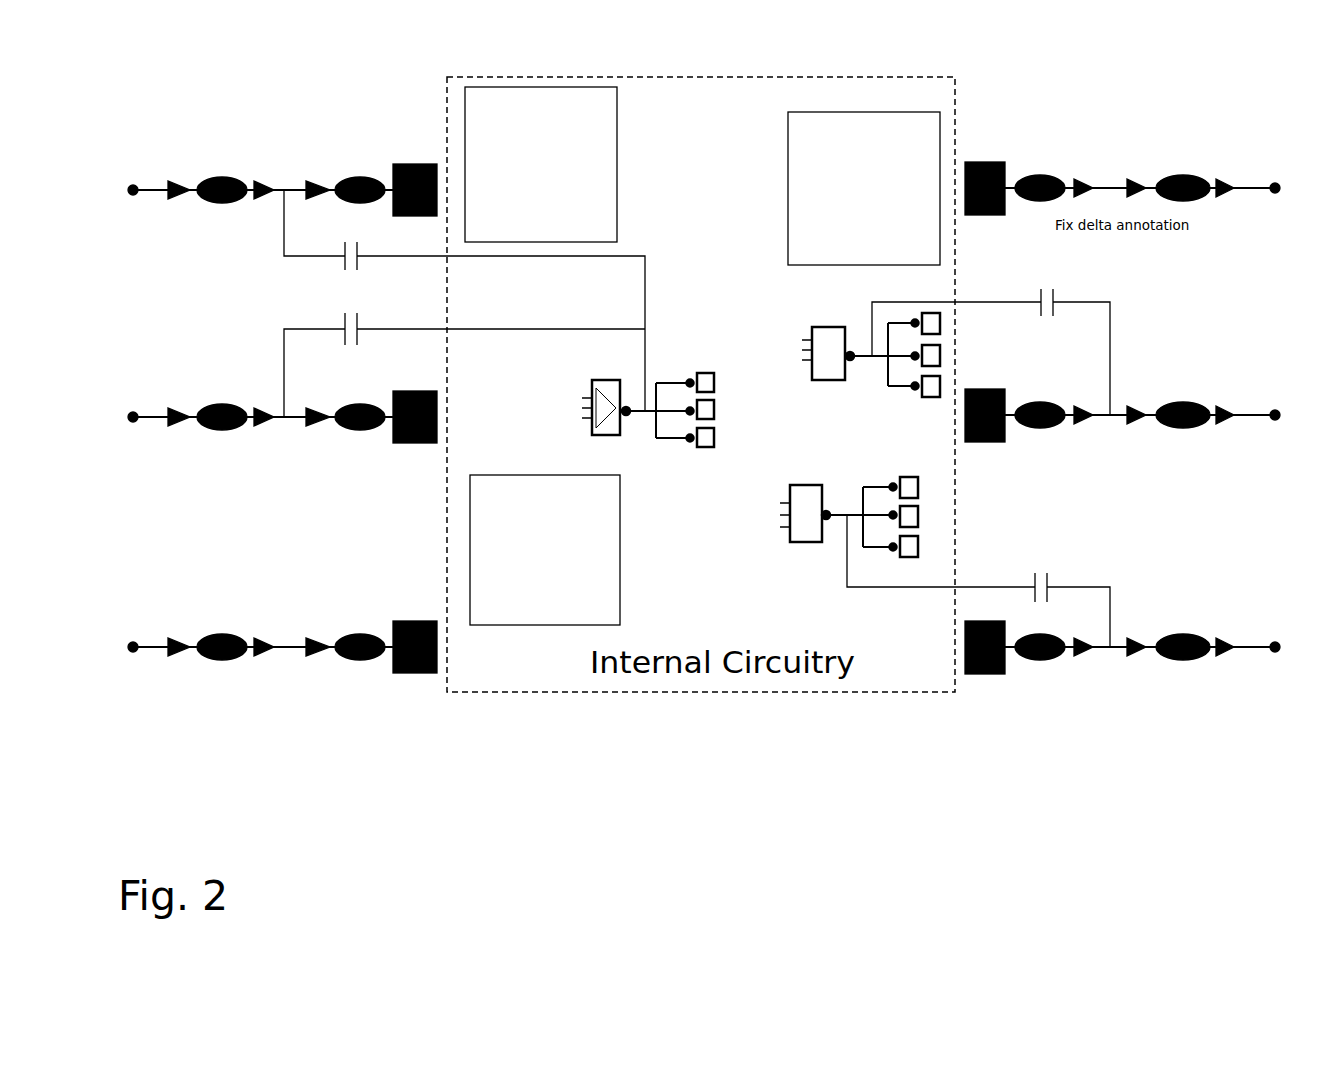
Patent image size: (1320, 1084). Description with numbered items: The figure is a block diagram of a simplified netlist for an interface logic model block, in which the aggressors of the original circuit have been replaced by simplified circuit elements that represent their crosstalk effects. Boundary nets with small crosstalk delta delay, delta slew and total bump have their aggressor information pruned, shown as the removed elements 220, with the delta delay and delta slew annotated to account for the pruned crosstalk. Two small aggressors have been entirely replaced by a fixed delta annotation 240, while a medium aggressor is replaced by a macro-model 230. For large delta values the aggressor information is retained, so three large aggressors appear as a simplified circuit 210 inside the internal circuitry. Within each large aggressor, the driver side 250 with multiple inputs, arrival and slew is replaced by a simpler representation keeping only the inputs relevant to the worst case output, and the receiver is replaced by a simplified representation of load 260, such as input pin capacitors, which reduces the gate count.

The circuit 210 is at (588, 384).
The removed elements 220 is at (702, 356).
The macro-model 230 is at (156, 244).
The fixed delta annotation 240 is at (231, 684).
The driver side 250 is at (807, 359).
The load 260 is at (700, 378).